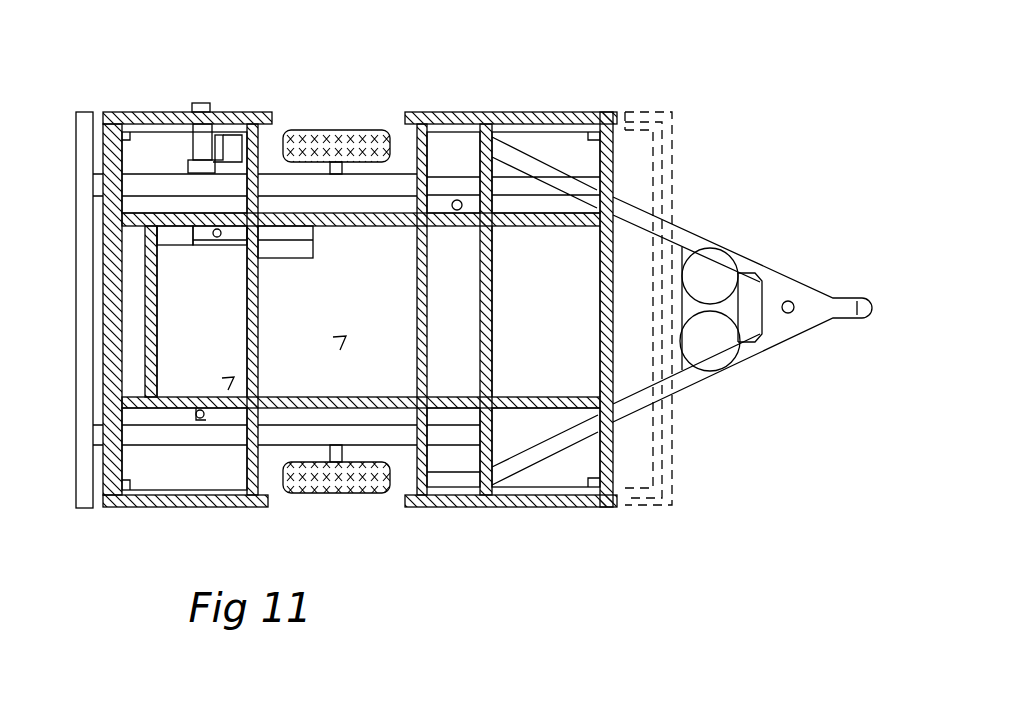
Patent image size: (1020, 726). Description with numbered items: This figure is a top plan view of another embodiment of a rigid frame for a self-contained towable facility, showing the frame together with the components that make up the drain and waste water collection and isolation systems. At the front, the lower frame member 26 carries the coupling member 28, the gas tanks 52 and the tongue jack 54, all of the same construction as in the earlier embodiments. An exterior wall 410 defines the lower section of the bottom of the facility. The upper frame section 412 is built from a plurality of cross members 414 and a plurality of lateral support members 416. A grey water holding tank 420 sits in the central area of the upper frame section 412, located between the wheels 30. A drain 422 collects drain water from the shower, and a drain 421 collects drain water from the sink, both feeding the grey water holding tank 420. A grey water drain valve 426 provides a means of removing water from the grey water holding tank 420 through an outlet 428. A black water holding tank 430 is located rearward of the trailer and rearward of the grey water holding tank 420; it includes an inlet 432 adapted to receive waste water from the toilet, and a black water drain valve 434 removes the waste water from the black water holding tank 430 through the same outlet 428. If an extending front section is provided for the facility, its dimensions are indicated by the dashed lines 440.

The lower frame member 26 is at (773, 283).
The coupling member 28 is at (858, 309).
The wheels 30 is at (323, 128).
The gas tanks 52 is at (712, 258).
The tongue jack 54 is at (789, 315).
The exterior wall 410 is at (608, 116).
The upper frame section 412 is at (555, 120).
The cross members 414 is at (247, 347).
The lateral support members 416 is at (432, 226).
The grey water holding tank 420 is at (340, 350).
The drain 421 is at (458, 200).
The drain 422 is at (217, 238).
The grey water drain valve 426 is at (220, 135).
The outlet 428 is at (198, 103).
The black water holding tank 430 is at (228, 390).
The inlet 432 is at (197, 423).
The black water drain valve 434 is at (187, 162).
The dashed lines 440 is at (675, 124).